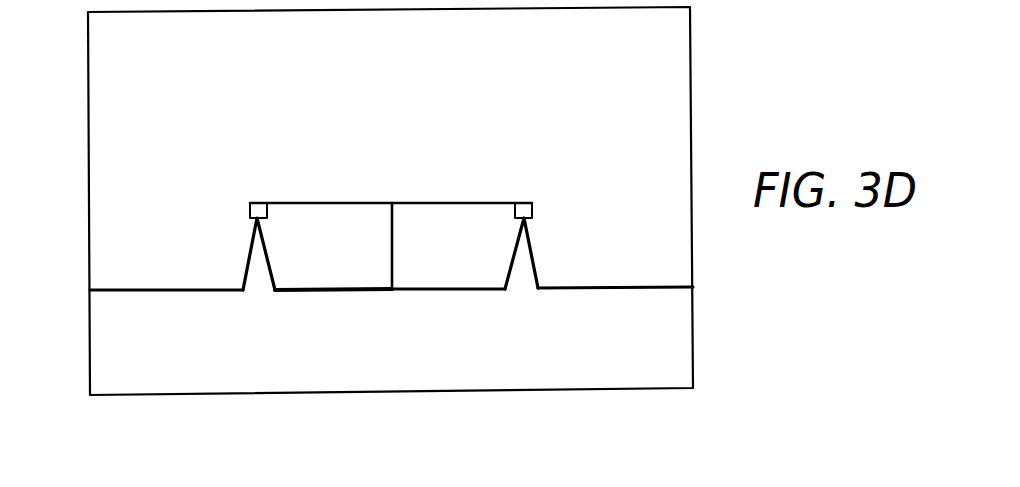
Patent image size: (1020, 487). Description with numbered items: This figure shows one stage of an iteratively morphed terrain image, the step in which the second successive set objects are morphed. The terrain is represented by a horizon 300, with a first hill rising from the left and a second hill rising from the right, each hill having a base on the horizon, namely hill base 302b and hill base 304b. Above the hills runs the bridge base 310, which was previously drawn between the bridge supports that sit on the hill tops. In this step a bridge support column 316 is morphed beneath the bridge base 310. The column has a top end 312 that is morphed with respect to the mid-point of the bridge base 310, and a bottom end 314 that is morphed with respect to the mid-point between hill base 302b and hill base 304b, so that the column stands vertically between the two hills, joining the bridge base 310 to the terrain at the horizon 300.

The horizon 300 is at (596, 290).
The bridge base 310 is at (328, 202).
The top end 312 is at (392, 203).
The base 302b is at (285, 288).
The base 304b is at (500, 288).
The bottom end 314 is at (392, 290).
The bridge support column 316 is at (394, 230).